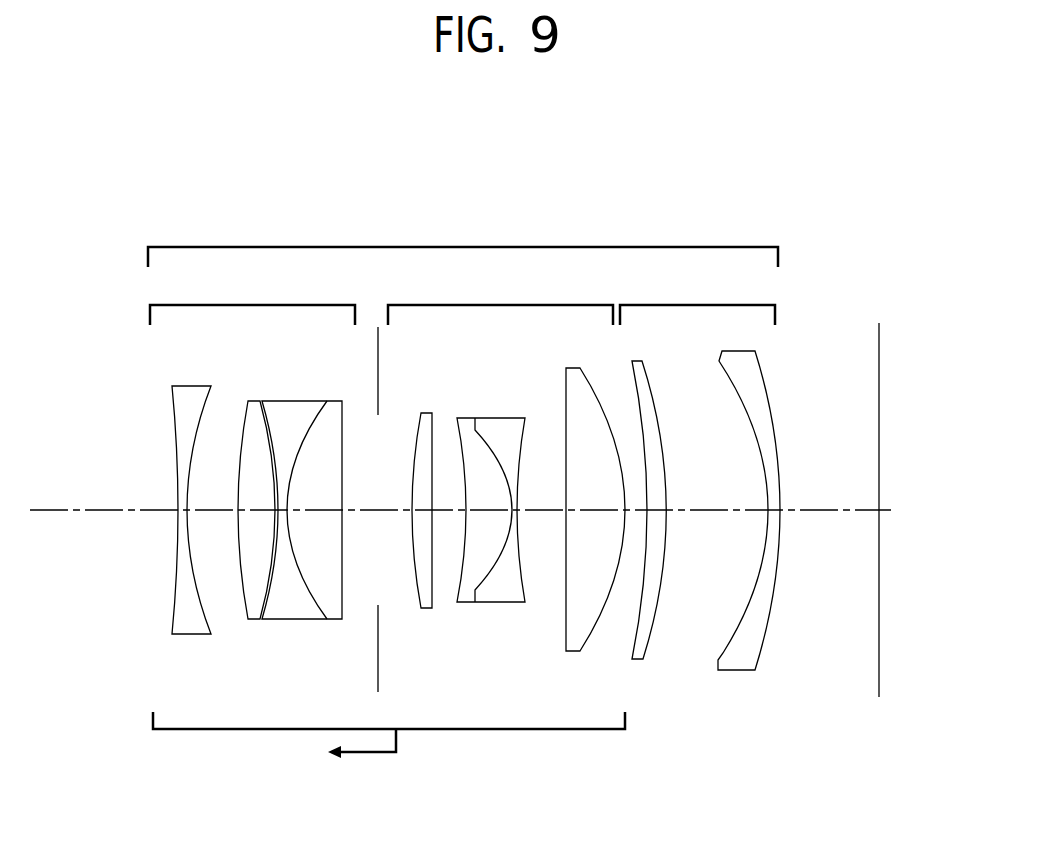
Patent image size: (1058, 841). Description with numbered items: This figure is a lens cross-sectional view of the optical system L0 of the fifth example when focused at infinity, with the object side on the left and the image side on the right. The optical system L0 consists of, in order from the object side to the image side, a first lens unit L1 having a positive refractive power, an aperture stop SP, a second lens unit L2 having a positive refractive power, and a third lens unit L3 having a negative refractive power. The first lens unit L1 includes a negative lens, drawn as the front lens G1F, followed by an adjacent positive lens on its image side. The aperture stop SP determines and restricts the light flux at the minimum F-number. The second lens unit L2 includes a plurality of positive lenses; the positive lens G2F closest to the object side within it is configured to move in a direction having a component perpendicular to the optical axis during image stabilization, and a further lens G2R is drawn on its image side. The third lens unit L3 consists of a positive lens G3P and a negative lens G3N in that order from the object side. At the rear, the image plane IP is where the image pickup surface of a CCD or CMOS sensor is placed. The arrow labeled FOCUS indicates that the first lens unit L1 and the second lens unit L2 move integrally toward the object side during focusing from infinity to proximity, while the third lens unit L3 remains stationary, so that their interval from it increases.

The optical system L0 is at (463, 242).
The first lens unit L1 is at (252, 299).
The second lens unit L2 is at (500, 299).
The third lens unit L3 is at (697, 299).
The front lens of first lens unit G1F is at (192, 398).
The positive lens G2F is at (427, 420).
The rear lens of second lens unit G2R is at (580, 383).
The positive lens G3P is at (647, 385).
The negative lens G3N is at (745, 377).
The aperture stop SP is at (377, 652).
The image plane IP is at (879, 425).
The focus arrow FOCUS is at (389, 752).